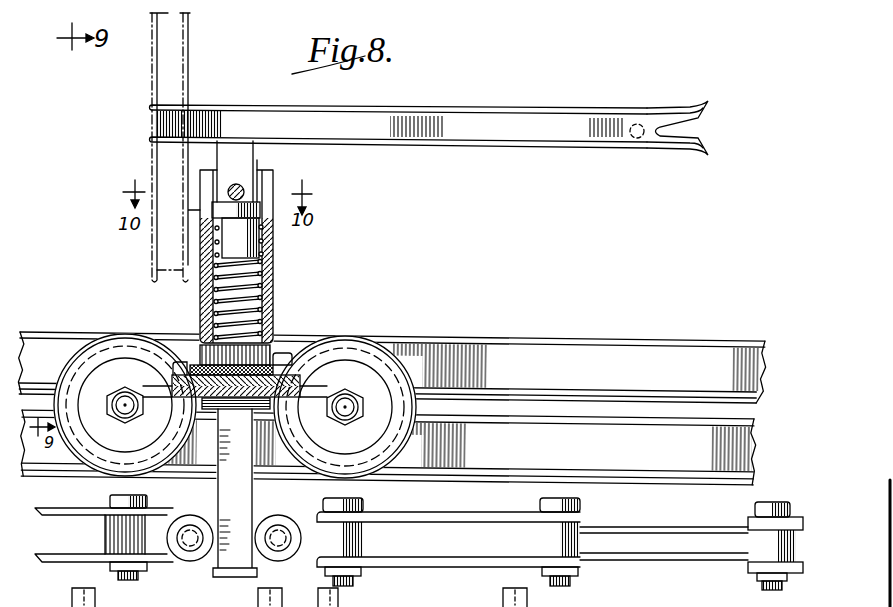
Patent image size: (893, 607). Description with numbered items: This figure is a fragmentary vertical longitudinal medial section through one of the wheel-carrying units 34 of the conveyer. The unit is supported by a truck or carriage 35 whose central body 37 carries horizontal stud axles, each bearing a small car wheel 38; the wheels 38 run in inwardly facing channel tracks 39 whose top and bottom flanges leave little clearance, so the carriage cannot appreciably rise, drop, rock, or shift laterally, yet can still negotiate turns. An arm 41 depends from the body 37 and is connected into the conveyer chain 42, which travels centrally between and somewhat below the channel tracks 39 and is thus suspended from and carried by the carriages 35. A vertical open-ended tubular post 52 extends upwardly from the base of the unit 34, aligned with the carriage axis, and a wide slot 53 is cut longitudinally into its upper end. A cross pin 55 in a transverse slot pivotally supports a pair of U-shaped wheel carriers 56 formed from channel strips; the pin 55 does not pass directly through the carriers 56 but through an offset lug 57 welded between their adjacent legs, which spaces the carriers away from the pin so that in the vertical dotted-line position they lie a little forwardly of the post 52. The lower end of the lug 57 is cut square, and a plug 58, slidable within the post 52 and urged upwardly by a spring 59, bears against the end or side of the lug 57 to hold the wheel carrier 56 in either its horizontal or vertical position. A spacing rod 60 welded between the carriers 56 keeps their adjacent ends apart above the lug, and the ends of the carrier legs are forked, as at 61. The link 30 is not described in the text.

The link arm 30 is at (691, 524).
The wheel-carrying unit 34 is at (287, 323).
The truck or carriage 35 is at (258, 378).
The central body 37 is at (232, 404).
The car wheel 38 is at (138, 381).
The channel track 39 is at (607, 318).
The arm 41 is at (249, 488).
The conveyer chain 42 is at (469, 519).
The tubular post 52 is at (262, 277).
The wide slot 53 is at (207, 177).
The cross pin 55 is at (237, 184).
The U-shaped wheel carrier 56 is at (400, 147).
The offset lug 57 is at (257, 160).
The plug 58 is at (263, 216).
The spring 59 is at (272, 297).
The spacing rod 60 is at (639, 122).
The forked end 61 is at (670, 133).